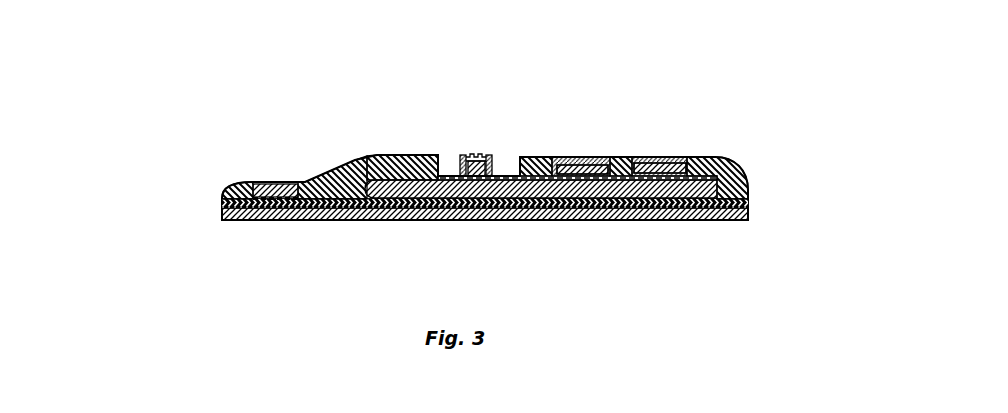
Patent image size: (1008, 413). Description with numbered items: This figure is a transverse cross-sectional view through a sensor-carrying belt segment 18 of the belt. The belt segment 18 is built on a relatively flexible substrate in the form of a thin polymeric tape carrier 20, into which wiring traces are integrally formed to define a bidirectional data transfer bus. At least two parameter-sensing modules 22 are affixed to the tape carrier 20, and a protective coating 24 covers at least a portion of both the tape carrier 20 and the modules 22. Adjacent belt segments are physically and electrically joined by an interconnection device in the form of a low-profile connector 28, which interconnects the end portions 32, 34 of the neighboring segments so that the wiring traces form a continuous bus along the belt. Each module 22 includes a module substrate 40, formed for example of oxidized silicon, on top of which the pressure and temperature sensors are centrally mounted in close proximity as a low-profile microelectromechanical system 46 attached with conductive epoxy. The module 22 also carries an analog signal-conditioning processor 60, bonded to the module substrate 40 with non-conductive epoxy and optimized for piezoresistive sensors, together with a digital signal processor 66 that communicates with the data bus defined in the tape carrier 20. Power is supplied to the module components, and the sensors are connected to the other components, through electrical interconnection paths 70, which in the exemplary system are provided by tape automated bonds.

The sensor-carrying belt segment 18 is at (553, 112).
The tape carrier 20 is at (343, 221).
The parameter-sensing module 22 is at (733, 188).
The protective coating 24 is at (388, 156).
The low-profile connector 28 is at (278, 181).
The end portion 32 is at (252, 221).
The end portion 34 is at (300, 221).
The module substrate 40 is at (617, 190).
The microelectromechanical system 46 is at (493, 155).
The analog signal-conditioning processor 60 is at (672, 157).
The digital signal processor 66 is at (590, 157).
The electrical interconnection path 70 is at (363, 166).